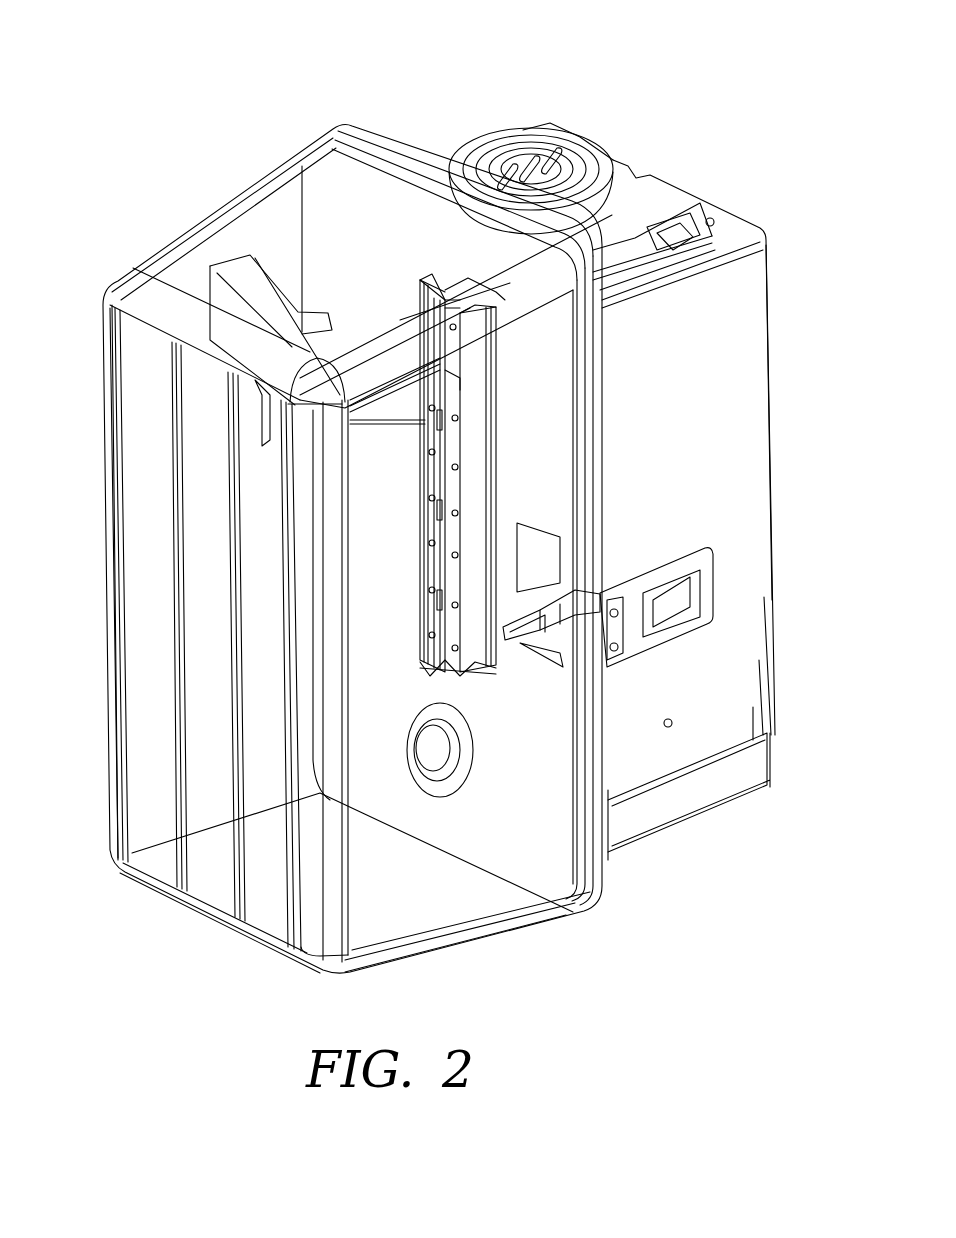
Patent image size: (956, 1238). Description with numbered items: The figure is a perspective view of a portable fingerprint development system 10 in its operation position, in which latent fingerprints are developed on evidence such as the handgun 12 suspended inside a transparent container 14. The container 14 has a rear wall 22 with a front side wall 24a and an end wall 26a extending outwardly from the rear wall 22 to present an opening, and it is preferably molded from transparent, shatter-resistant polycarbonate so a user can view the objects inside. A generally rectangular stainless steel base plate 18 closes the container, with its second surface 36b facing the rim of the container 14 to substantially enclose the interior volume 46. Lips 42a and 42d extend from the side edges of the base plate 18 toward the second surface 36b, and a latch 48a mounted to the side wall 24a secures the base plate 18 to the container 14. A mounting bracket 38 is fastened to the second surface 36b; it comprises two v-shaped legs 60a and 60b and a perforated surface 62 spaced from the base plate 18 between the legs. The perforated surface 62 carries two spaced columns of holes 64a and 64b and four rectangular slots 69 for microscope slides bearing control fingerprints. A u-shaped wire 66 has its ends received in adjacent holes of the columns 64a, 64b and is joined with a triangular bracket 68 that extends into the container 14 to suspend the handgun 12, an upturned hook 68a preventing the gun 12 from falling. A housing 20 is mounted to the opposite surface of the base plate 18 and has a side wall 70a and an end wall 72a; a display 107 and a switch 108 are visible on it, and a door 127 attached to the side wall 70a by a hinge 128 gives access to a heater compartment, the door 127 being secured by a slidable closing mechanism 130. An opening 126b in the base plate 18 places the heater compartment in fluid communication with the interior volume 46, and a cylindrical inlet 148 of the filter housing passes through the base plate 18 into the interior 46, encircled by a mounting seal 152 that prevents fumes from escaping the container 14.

The portable fingerprint development system 10 is at (262, 100).
The handgun 12 is at (254, 272).
The transparent container 14 is at (163, 238).
The base plate 18 is at (436, 287).
The housing 20 is at (733, 212).
The rear wall 22 is at (135, 560).
The front side wall 24a is at (466, 923).
The end wall 26a is at (247, 202).
The second surface 36b is at (456, 328).
The mounting bracket 38 is at (423, 657).
The lip 42a is at (371, 147).
The lip 42d is at (598, 418).
The interior volume 46 is at (352, 661).
The latch 48a is at (567, 660).
The v-shaped leg 60a is at (489, 310).
The v-shaped leg 60b is at (430, 288).
The perforated surface 62 is at (446, 307).
The column of holes 64a is at (420, 298).
The column of holes 64b is at (483, 297).
The u-shaped wire 66 is at (470, 388).
The triangular bracket 68 is at (388, 424).
The upturned hook 68a is at (256, 432).
The rectangular slots 69 is at (433, 537).
The side wall 70a is at (758, 306).
The end wall 72a is at (620, 167).
The display 107 is at (630, 262).
The switch 108 is at (703, 246).
The opening 126b is at (542, 528).
The door 127 is at (677, 562).
The hinge 128 is at (614, 594).
The closing mechanism 130 is at (670, 608).
The cylindrical inlet 148 is at (432, 737).
The mounting seal 152 is at (463, 783).